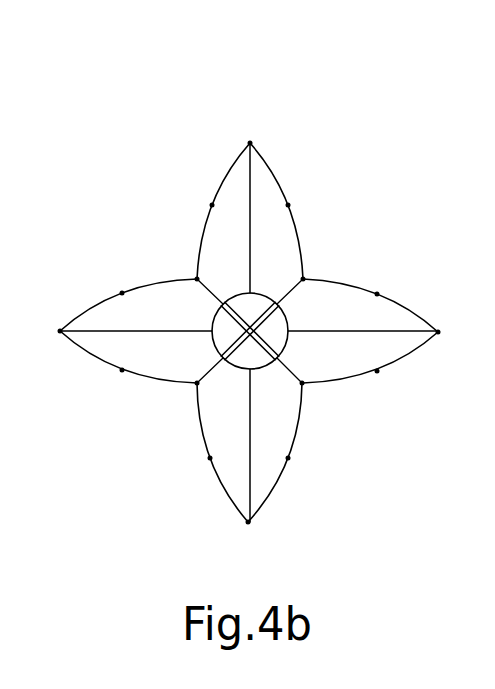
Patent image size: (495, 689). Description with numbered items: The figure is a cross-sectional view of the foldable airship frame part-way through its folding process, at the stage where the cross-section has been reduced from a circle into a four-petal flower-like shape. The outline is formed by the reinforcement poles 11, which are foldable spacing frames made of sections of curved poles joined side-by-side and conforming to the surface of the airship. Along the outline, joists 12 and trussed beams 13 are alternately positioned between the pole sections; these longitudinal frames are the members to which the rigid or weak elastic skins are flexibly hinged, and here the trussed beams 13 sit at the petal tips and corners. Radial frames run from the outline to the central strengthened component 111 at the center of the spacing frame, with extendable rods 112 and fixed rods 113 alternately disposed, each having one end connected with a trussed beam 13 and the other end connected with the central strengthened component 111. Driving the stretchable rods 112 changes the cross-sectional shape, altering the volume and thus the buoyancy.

The reinforcement pole 11 is at (396, 297).
The joist 12 is at (210, 205).
The trussed beam 13 is at (250, 145).
The central strengthened component 111 is at (242, 343).
The extendable rod 112 is at (303, 278).
The fixed rod 113 is at (250, 204).